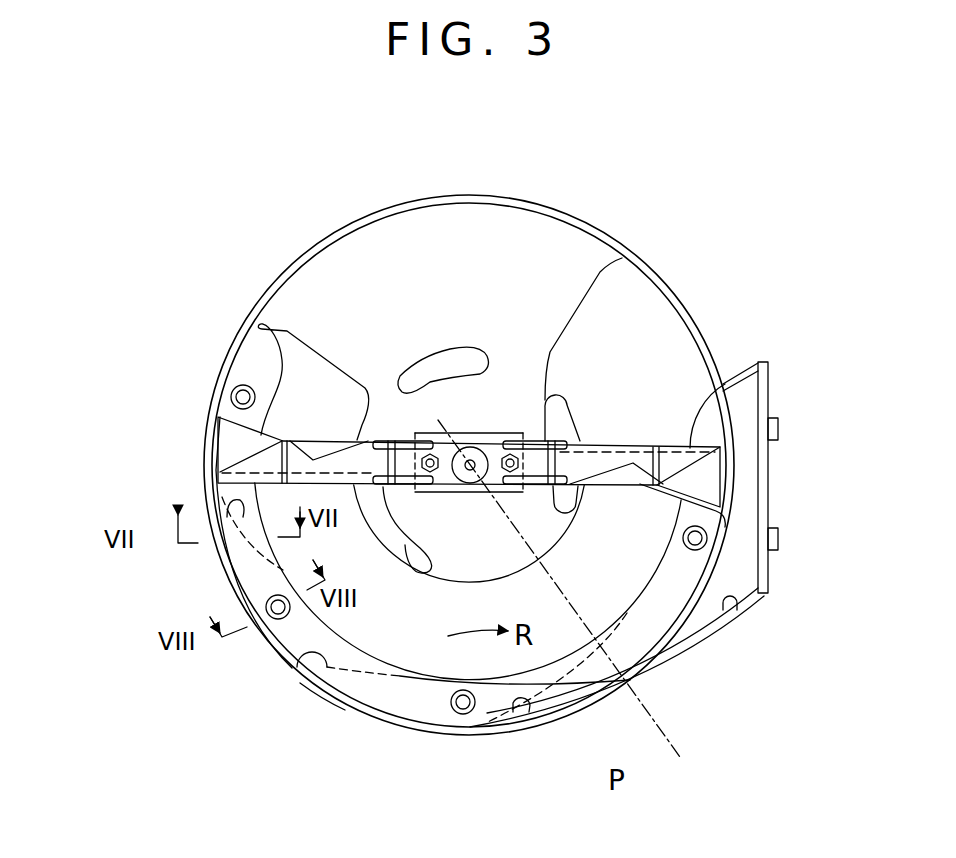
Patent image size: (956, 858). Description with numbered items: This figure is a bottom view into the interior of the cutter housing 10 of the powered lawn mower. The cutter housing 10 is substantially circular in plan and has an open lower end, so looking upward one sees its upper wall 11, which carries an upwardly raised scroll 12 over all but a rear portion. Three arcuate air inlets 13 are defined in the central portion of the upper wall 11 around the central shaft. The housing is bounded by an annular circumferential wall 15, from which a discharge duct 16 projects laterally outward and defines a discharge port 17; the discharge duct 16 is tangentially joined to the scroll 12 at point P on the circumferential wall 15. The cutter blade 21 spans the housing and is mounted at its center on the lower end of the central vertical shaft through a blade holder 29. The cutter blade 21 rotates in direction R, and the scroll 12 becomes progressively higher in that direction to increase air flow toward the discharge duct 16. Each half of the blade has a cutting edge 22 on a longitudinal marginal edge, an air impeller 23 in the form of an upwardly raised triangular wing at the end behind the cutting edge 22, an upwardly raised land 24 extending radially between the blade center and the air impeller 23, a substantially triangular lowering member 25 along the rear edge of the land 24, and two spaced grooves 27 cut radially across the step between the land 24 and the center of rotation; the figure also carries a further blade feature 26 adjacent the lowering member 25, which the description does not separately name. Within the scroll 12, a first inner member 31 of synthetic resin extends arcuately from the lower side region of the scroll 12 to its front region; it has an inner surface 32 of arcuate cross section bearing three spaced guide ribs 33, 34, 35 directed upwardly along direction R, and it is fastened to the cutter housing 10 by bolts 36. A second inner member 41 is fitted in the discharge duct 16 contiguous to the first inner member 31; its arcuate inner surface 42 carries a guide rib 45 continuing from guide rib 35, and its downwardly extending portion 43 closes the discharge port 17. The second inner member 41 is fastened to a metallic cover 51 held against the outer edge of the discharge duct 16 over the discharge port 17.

The cutter housing 10 is at (295, 236).
The upper wall 11 is at (461, 255).
The scroll 12 is at (475, 605).
The arcuate air inlets 13 is at (438, 375).
The circumferential wall 15 is at (322, 690).
The discharge duct 16 is at (728, 605).
The discharge port 17 is at (773, 587).
The cutter blade 21 is at (624, 428).
The cutting edge 22 is at (459, 467).
The air impeller 23 is at (215, 414).
The upwardly raised land 24 is at (598, 457).
The lowering member 25 is at (310, 438).
The projection 26 is at (333, 443).
The grooves 27 is at (399, 441).
The blade holder 29 is at (483, 433).
The first inner member 31 is at (351, 636).
The inner surface 32 is at (422, 697).
The guide rib 33 is at (218, 495).
The guide rib 34 is at (300, 658).
The guide rib 35 is at (513, 713).
The bolts 36 is at (236, 390).
The second inner member 41 is at (655, 557).
The inner surface 42 is at (670, 587).
The downwardly extending portion 43 is at (747, 410).
The guide rib 45 is at (620, 626).
The metallic cover 51 is at (773, 480).